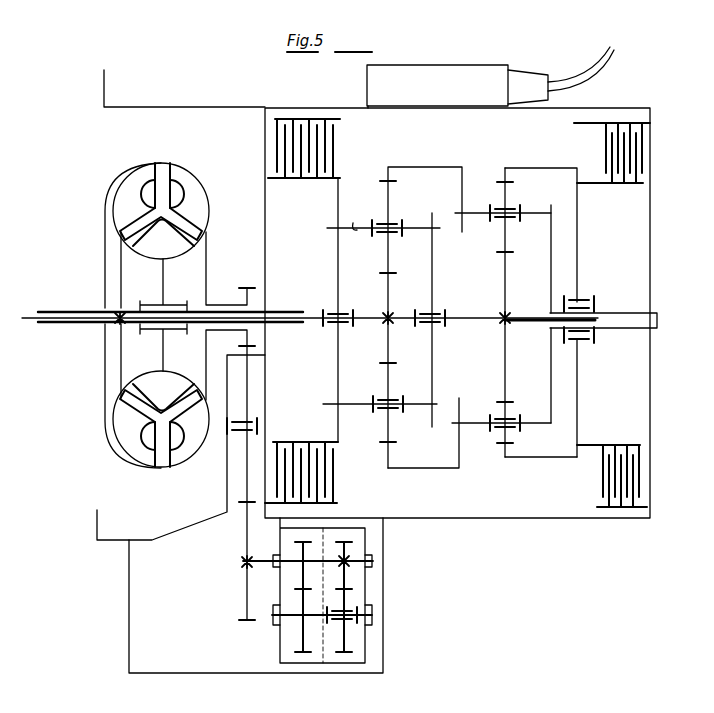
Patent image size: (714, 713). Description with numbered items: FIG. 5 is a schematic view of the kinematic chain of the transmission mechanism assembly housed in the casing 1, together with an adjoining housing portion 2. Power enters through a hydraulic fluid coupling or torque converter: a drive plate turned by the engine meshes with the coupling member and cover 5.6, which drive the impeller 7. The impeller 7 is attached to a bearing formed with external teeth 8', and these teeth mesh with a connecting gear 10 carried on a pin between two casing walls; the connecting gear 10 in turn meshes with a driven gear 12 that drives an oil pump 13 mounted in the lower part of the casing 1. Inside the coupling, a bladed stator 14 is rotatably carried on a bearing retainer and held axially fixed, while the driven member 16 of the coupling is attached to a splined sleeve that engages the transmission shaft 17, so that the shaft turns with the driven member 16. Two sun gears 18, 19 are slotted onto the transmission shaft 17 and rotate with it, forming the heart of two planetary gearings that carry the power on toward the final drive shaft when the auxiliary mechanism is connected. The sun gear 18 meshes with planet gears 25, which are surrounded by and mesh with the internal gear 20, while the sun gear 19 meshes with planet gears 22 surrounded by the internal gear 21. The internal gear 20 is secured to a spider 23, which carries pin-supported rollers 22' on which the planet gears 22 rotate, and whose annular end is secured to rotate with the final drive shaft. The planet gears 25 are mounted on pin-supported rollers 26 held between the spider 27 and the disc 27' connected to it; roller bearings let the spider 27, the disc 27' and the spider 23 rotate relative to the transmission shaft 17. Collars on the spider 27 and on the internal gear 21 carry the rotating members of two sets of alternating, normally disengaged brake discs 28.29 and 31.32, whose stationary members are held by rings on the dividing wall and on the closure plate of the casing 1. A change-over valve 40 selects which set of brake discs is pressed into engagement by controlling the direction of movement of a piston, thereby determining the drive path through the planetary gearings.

The casing 1 is at (528, 520).
The housing 2 is at (129, 654).
The coupling member and cover 5.6 is at (104, 388).
The impeller 7 is at (190, 197).
The external teeth 8' is at (239, 291).
The connecting gear 10 is at (243, 467).
The driven gear 12 is at (245, 597).
The oil pump 13 is at (366, 642).
The stator 14 is at (150, 244).
The driven member 16 is at (130, 199).
The transmission shaft 17 is at (313, 311).
The sun gear 18 is at (387, 299).
The sun gear 19 is at (505, 284).
The internal gear 20 is at (417, 470).
The internal gear 21 is at (537, 458).
The planet gears 22 is at (503, 188).
The pin-supported rollers 22' is at (534, 314).
The spider 23 is at (552, 265).
The planet gears 25 is at (388, 262).
The pin-supported rollers 26 is at (383, 219).
The spider 27 is at (320, 310).
The disc 27' is at (444, 320).
The brake discs 28.29 is at (310, 157).
The brake discs 31.32 is at (625, 160).
The change-over valve 40 is at (378, 90).